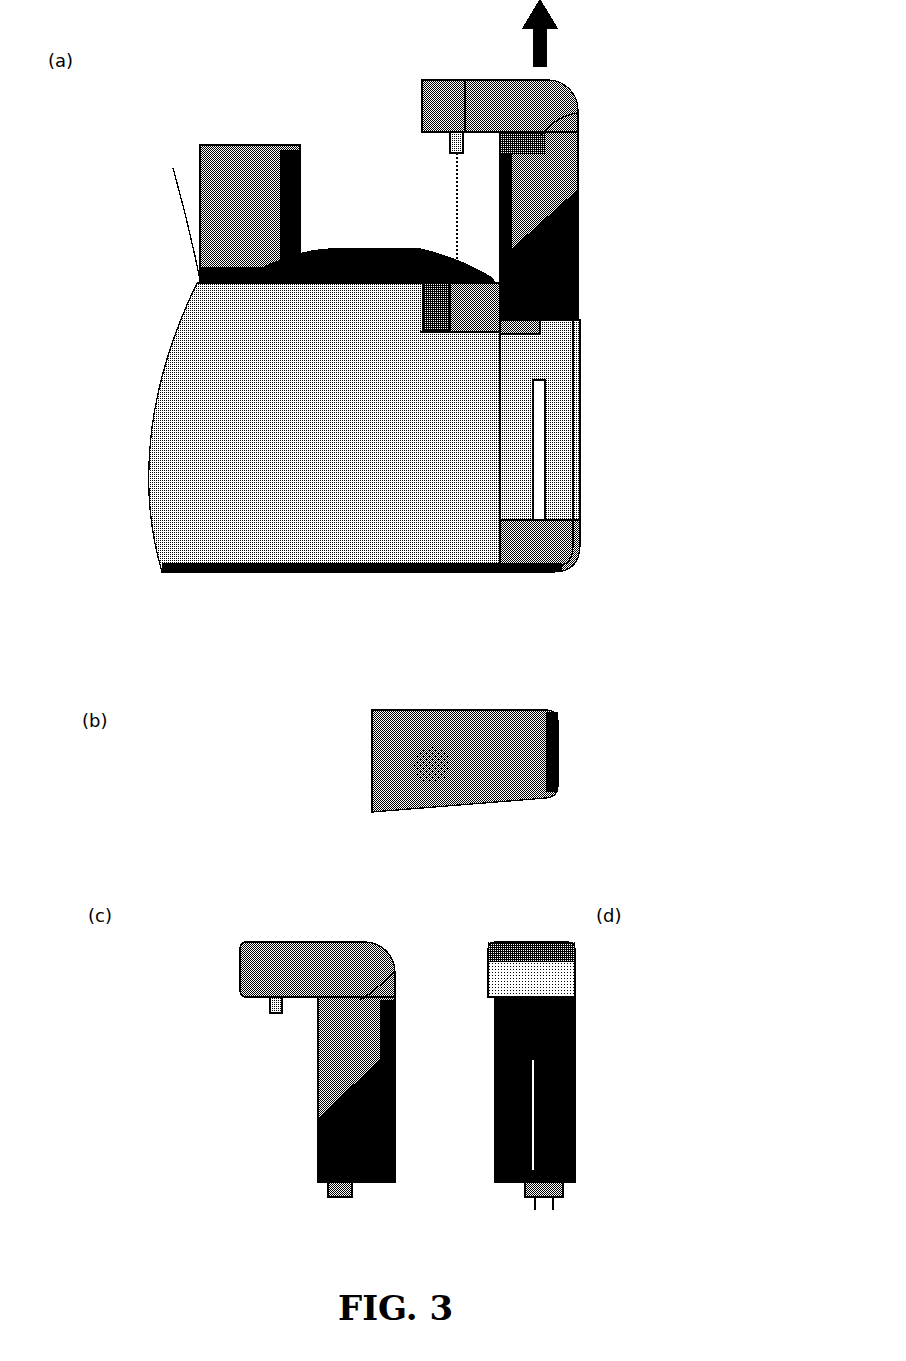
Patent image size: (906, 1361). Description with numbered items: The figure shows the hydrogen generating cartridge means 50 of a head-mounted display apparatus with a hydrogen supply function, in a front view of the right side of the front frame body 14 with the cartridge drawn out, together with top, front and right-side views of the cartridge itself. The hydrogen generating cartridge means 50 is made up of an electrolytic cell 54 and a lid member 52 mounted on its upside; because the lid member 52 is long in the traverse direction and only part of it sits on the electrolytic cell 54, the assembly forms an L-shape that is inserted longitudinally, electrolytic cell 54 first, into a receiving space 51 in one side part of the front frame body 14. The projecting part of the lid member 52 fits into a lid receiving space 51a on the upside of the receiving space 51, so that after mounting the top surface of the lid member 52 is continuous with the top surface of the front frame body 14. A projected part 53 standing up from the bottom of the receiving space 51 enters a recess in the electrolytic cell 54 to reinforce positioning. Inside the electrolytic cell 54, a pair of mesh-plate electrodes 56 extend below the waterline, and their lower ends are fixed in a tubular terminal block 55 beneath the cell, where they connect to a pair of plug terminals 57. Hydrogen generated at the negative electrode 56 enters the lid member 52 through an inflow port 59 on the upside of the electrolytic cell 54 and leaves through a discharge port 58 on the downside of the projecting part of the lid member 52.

The front frame body 14 is at (364, 358).
The hydrogen generating cartridge means 50 is at (680, 82).
The receiving space 51 is at (558, 472).
The lid receiving space 51a is at (448, 300).
The lid member 52 is at (458, 95).
The projected part 53 is at (548, 405).
The electrolytic cell 54 is at (580, 156).
The terminal block 55 is at (535, 336).
The electrode 56 is at (530, 1097).
The plug terminal 57 is at (515, 350).
The discharge port 58 is at (455, 140).
The inflow port 59 is at (580, 113).